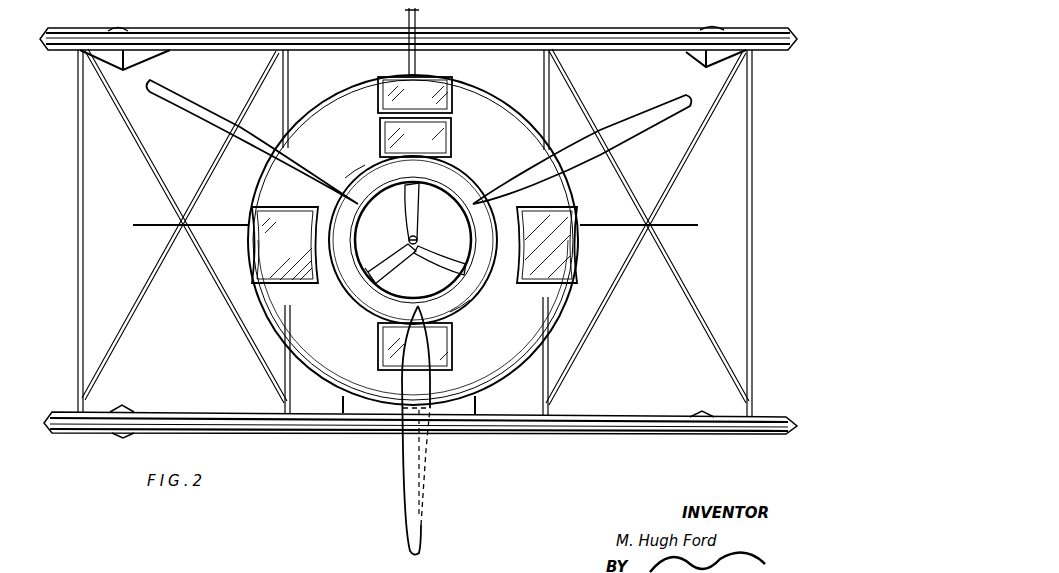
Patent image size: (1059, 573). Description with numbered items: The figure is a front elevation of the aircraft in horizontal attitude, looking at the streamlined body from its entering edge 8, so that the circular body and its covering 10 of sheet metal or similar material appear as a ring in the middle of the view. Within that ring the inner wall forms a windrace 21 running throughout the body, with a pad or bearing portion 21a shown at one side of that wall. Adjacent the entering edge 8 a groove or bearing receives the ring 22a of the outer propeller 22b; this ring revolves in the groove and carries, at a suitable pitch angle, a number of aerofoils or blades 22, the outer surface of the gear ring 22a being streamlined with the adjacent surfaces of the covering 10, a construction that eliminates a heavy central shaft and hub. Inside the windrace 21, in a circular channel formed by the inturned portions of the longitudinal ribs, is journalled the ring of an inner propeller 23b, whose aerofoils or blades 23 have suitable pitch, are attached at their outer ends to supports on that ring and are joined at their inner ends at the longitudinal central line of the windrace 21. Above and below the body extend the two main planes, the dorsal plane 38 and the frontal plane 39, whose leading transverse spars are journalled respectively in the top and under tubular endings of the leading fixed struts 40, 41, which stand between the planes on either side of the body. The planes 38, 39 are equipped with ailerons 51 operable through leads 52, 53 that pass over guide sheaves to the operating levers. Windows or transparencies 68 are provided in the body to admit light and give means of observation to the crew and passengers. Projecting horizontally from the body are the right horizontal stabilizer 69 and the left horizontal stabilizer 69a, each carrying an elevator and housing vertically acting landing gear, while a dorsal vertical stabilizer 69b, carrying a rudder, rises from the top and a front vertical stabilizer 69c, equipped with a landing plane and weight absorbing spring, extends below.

The entering edge 8 is at (373, 293).
The covering 10 is at (566, 198).
The windrace 21 is at (475, 204).
The blade socket pad 21a is at (363, 240).
The aerofoils or blades 22 is at (670, 144).
The ring 22a is at (462, 307).
The propeller 22b is at (349, 166).
The aerofoils or blades 23 is at (388, 253).
The inner propeller 23b is at (433, 200).
The dorsal plane 38 is at (592, 30).
The frontal plane 39 is at (566, 436).
The leading fixed strut 40 is at (546, 358).
The leading fixed strut 41 is at (287, 353).
The aileron 51 is at (113, 30).
The lead 52 is at (690, 440).
The lead 53 is at (130, 436).
The windows or transparencies 68 is at (442, 135).
The right horizontal stabilizer 69 is at (137, 228).
The left horizontal stabilizer 69a is at (680, 230).
The dorsal vertical stabilizer 69b is at (426, 40).
The front vertical stabilizer 69c is at (430, 463).